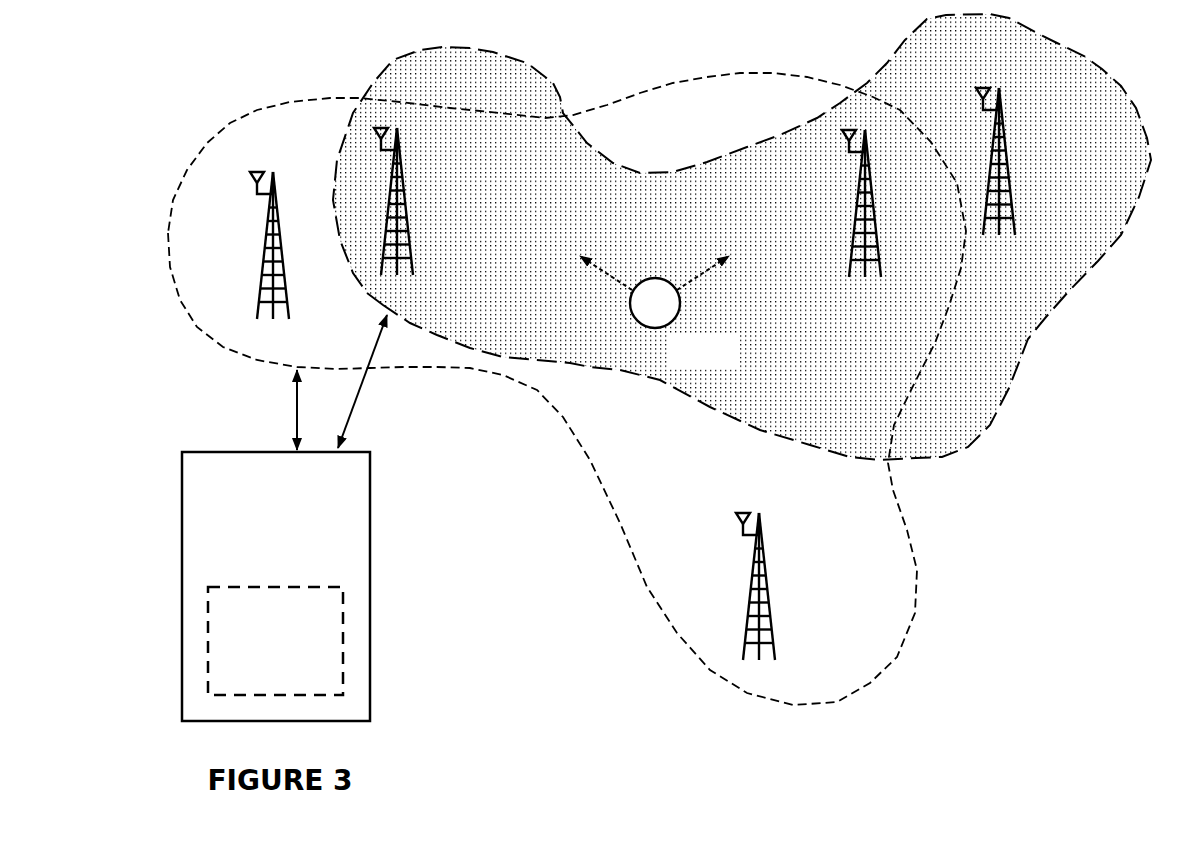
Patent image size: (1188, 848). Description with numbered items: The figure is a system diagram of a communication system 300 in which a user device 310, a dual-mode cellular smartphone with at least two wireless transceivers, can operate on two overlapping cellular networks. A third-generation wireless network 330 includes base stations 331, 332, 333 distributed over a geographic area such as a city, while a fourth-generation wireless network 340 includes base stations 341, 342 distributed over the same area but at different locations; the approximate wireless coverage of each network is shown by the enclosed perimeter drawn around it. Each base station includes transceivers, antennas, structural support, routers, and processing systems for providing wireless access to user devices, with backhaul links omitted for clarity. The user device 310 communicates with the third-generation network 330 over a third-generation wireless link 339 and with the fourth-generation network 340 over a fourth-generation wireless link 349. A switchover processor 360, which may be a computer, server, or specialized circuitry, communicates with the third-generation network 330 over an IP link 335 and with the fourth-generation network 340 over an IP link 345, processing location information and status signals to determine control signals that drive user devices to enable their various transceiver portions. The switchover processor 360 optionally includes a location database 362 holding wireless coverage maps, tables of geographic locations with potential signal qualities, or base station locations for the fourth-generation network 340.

The communication system 300 is at (140, 128).
The user device 310 is at (640, 312).
The 3G wireless network 330 is at (902, 520).
The 3G base station 331 is at (284, 250).
The 3G base station 332 is at (857, 180).
The 3G base station 333 is at (768, 592).
The IP link 335 is at (296, 397).
The 3G wireless link 339 is at (605, 273).
The 4G wireless network 340 is at (1050, 309).
The 4G base station 341 is at (404, 192).
The 4G base station 342 is at (1008, 168).
The IP link 345 is at (362, 392).
The 4G wireless link 349 is at (703, 270).
The switchover processor 360 is at (260, 538).
The location database 362 is at (260, 673).